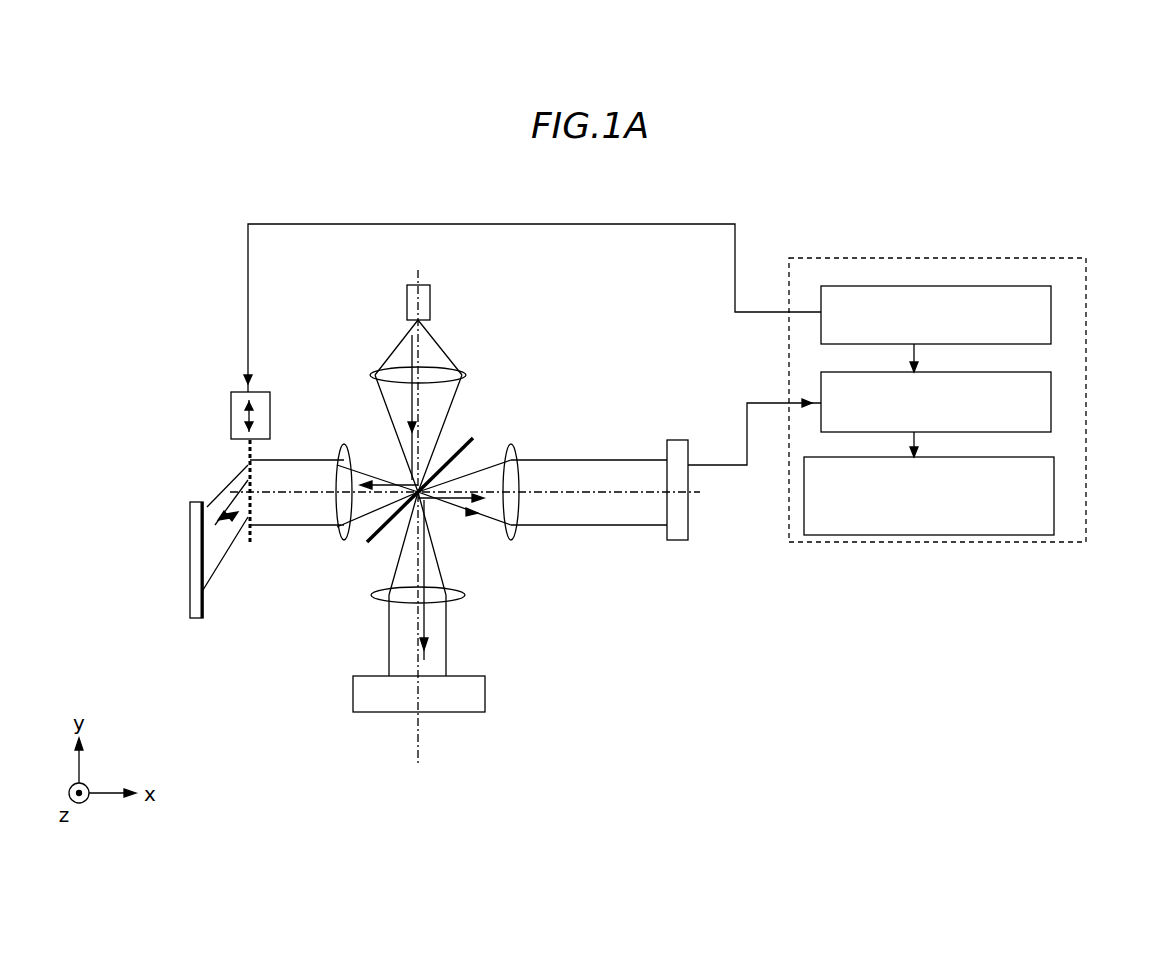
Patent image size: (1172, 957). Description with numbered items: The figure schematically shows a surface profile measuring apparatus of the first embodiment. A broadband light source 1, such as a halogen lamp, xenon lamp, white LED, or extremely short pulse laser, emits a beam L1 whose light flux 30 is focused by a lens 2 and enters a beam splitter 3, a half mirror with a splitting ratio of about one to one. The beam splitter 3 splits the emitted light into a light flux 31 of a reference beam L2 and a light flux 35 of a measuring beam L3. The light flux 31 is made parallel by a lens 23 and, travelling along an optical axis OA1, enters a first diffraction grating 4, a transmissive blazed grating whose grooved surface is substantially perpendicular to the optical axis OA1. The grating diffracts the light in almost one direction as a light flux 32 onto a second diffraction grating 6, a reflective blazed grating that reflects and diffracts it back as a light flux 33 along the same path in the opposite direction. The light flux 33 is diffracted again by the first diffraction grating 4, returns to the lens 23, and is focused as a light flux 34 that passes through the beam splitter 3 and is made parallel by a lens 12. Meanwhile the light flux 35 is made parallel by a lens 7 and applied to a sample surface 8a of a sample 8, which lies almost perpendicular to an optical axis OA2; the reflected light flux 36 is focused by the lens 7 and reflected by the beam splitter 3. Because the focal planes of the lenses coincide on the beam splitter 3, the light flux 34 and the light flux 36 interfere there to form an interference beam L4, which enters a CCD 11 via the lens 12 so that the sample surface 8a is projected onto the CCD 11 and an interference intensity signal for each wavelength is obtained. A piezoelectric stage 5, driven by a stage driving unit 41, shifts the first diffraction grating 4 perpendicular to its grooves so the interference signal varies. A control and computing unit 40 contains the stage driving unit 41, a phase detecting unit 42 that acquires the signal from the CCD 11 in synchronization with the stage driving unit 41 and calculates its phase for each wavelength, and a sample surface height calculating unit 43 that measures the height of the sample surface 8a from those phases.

The light source 1 is at (432, 302).
The emitted beam L1 is at (437, 350).
The light flux 30 is at (410, 352).
The lens 2 is at (466, 372).
The beam splitter 3 is at (455, 445).
The lens 23 is at (340, 448).
The lens 12 is at (515, 448).
The reference beam L2 is at (275, 520).
The light flux 31 is at (385, 480).
The light flux 34 is at (458, 490).
The interference beam L4 is at (490, 530).
The light flux 36 is at (440, 520).
The optical axis OA1 is at (610, 500).
The CCD 11 is at (678, 542).
The piezoelectric stage 5 is at (228, 400).
The first diffraction grating 4 is at (246, 470).
The light flux 32 is at (215, 488).
The light flux 33 is at (225, 540).
The second diffraction grating 6 is at (188, 578).
The lens 7 is at (372, 597).
The measuring beam L3 is at (448, 640).
The light flux 35 is at (418, 632).
The sample 8 is at (487, 690).
The sample surface 8a is at (435, 680).
The optical axis OA2 is at (415, 735).
The control and computing unit 40 is at (868, 258).
The stage driving unit 41 is at (1053, 312).
The phase detecting unit 42 is at (1053, 402).
The sample surface height calculating unit 43 is at (1056, 486).